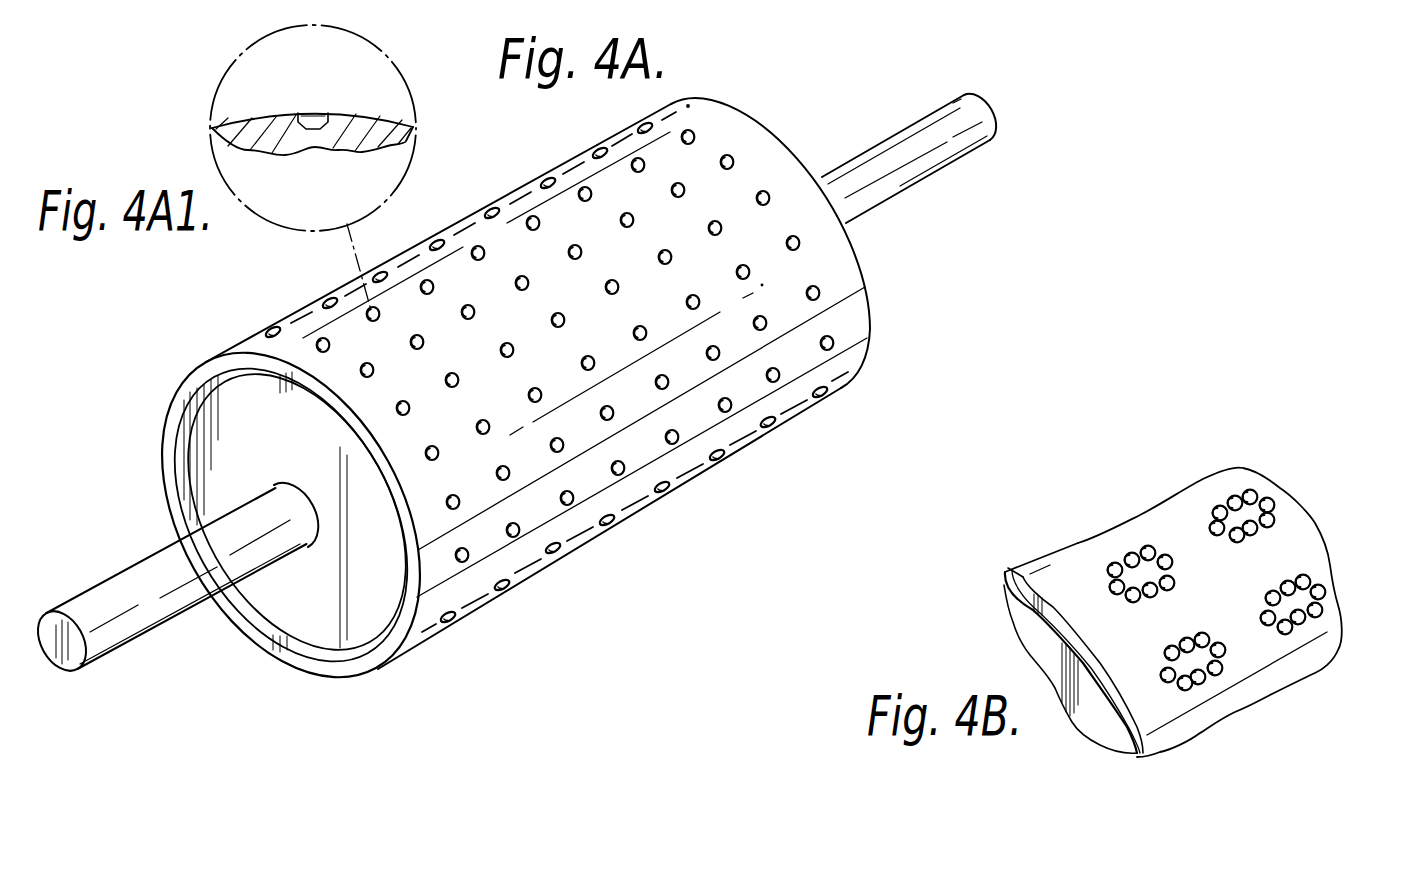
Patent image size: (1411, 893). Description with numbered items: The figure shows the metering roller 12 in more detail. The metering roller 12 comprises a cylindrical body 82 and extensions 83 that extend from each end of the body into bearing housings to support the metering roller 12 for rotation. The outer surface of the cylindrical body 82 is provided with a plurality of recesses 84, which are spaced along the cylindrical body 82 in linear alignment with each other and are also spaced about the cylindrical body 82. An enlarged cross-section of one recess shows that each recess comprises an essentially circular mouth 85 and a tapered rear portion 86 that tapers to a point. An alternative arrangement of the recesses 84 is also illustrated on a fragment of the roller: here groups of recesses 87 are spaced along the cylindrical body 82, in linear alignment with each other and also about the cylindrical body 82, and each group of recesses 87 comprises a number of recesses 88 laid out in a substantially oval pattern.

In FIG. 4A, the metering roller 12 is at (629, 543).
In FIG. 4B, the metering roller 12 is at (1270, 712).
In FIG. 4A, the cylindrical body 82 is at (170, 382).
In FIG. 4A, the extensions 83 is at (132, 623).
In FIG. 4A, the recesses 84 is at (741, 146).
In FIG. 4A1, the circular mouth 85 is at (313, 112).
In FIG. 4A1, the tapered rear portion 86 is at (316, 134).
In FIG. 4B, the groups of recesses 87 is at (1133, 538).
In FIG. 4B, the recesses 88 is at (1255, 496).